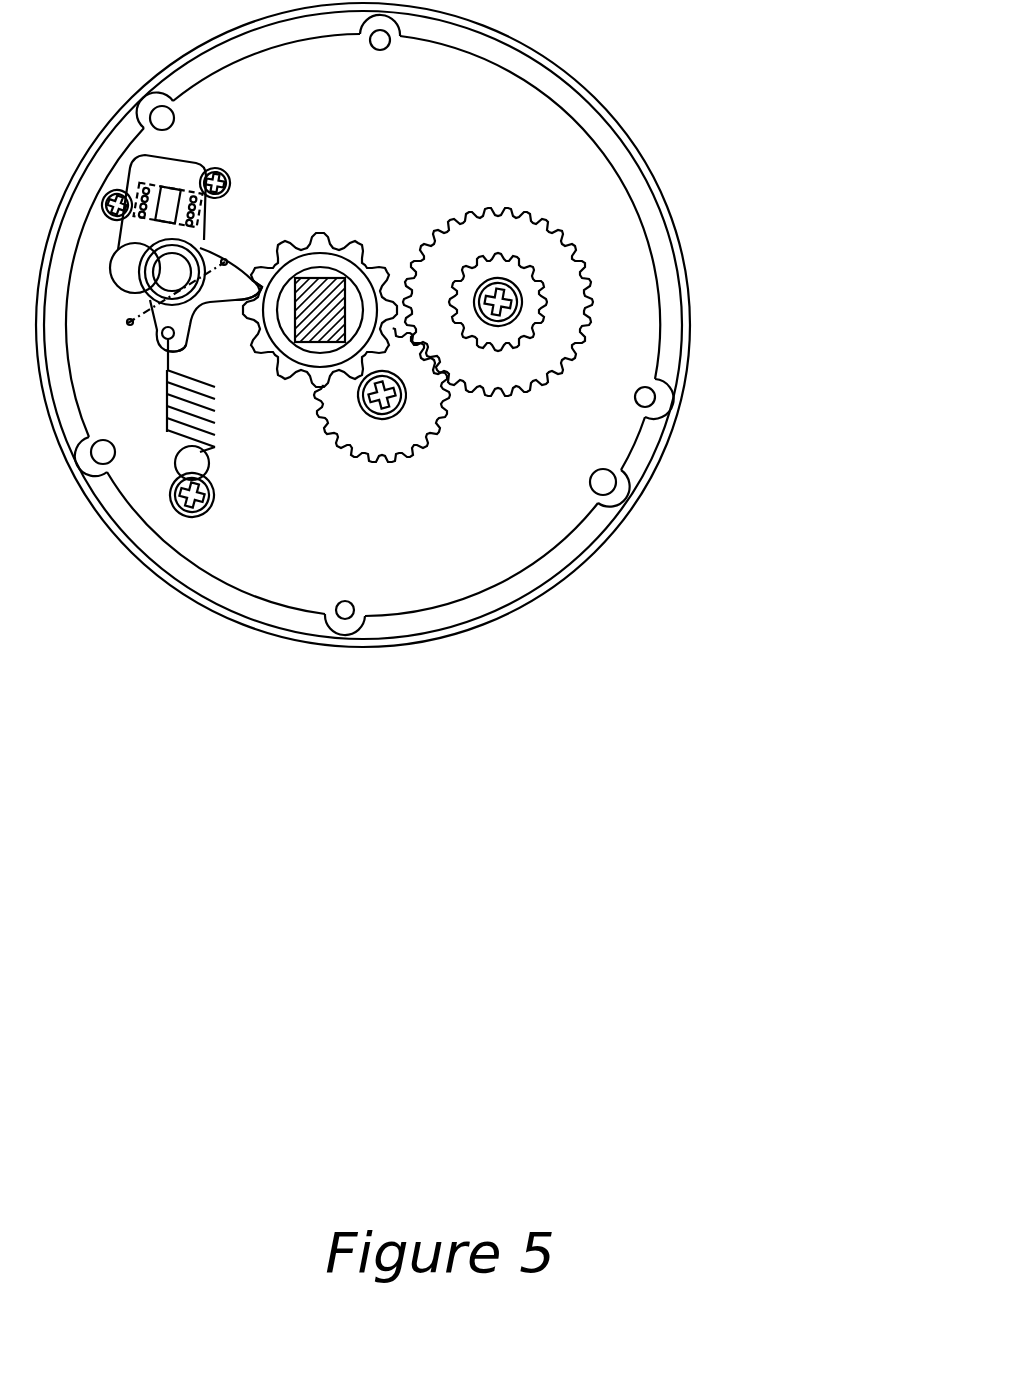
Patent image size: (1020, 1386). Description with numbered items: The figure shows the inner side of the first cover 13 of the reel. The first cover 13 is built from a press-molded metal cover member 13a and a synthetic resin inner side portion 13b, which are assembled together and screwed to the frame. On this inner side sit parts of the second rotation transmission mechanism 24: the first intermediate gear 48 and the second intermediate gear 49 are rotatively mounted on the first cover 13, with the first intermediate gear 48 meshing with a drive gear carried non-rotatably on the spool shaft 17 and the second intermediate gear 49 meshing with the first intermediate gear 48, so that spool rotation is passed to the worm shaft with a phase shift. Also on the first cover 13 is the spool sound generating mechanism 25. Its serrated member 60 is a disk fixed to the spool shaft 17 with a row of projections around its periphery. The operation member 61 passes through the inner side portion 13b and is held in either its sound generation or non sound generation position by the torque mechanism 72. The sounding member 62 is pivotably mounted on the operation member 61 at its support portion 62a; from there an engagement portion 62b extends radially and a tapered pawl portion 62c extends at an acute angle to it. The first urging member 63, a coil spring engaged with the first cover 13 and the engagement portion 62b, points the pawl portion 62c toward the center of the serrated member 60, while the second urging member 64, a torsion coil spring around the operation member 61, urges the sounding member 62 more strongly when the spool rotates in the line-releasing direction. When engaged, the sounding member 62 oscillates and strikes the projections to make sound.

The first cover 13 is at (642, 182).
The cover member 13a is at (620, 132).
The inner side portion 13b is at (592, 118).
The spool shaft 17 is at (362, 266).
The second rotation transmission mechanism 24 is at (473, 400).
The spool sound generating mechanism 25 is at (240, 153).
The first intermediate gear 48 is at (413, 440).
The second intermediate gear 49 is at (498, 359).
The serrated member 60 is at (357, 272).
The operation member 61 is at (118, 272).
The sounding member 62 is at (245, 246).
The support portion 62a is at (232, 270).
The engagement portion 62b is at (190, 333).
The pawl portion 62c is at (272, 258).
The first urging member 63 is at (215, 410).
The second urging member 64 is at (162, 338).
The torque mechanism 72 is at (175, 175).